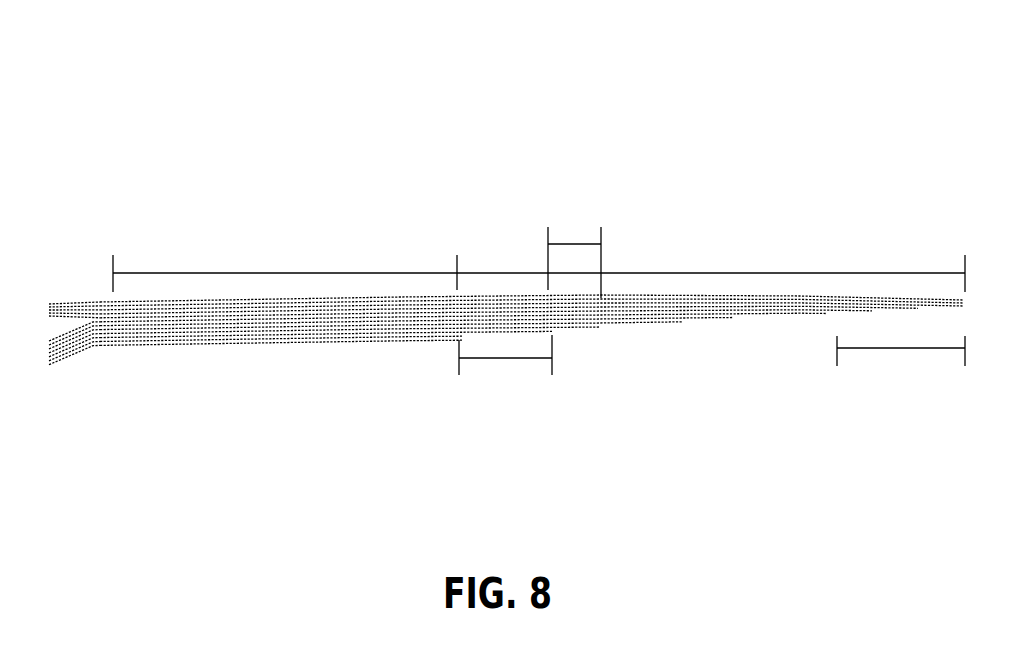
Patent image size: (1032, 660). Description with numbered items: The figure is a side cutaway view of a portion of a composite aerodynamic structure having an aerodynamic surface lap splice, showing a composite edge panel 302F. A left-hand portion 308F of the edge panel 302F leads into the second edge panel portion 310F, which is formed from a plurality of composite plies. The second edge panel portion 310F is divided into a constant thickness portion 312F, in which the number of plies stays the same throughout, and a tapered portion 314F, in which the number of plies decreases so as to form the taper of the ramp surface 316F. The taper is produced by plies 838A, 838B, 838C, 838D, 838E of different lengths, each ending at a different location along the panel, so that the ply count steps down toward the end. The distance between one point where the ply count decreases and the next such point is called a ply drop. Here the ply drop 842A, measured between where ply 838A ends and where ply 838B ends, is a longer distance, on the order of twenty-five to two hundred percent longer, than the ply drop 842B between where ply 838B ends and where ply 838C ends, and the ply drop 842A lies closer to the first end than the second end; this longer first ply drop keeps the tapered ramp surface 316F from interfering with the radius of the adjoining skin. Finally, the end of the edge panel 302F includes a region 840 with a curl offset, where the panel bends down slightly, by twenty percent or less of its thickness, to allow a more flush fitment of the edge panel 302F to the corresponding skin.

The composite edge panel 302F is at (290, 70).
The angled root portion 308F is at (76, 300).
The second edge panel portion 310F is at (283, 300).
The constant thickness portion 312F is at (385, 272).
The tapered portion 314F is at (678, 272).
The ramp surface 316F is at (725, 330).
The ply 838A is at (415, 340).
The ply 838B is at (555, 335).
The ply 838C is at (589, 333).
The ply 838D is at (628, 333).
The ply 838E is at (680, 333).
The region with curl offset 840 is at (903, 362).
The ply drop 842A is at (497, 362).
The ply drop 842B is at (571, 243).